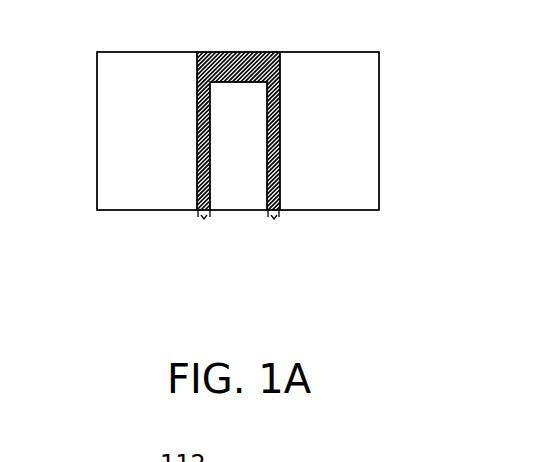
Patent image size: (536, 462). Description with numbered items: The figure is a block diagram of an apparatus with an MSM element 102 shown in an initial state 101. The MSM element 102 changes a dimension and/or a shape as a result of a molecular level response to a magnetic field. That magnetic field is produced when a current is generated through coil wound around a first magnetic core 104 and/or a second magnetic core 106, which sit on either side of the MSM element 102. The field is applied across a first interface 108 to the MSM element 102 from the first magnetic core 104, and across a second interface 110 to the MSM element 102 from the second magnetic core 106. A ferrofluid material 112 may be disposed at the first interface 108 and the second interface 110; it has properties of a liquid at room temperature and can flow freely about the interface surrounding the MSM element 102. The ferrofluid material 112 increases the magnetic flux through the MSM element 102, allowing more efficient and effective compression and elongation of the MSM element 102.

The initial state 101 is at (263, 344).
The MSM element 102 is at (238, 212).
The first magnetic core 104 is at (122, 51).
The second magnetic core 106 is at (353, 52).
The first interface 108 is at (205, 218).
The second interface 110 is at (274, 218).
The ferrofluid material 112 is at (232, 52).